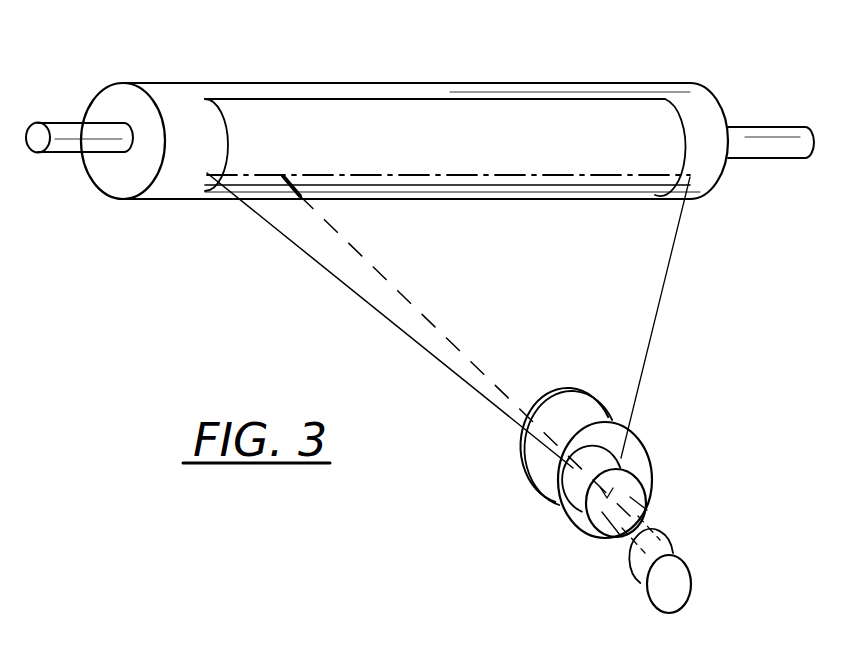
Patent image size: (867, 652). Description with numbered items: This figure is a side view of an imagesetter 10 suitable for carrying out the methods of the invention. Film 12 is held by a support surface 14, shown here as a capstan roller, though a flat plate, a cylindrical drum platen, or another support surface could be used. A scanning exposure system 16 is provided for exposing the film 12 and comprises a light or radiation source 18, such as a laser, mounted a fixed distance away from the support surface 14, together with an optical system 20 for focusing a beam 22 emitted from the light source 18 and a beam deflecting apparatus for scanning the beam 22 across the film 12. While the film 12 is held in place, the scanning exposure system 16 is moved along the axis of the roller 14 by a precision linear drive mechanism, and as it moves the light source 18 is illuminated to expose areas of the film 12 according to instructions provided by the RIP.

The imagesetter 10 is at (594, 500).
The film 12 is at (708, 173).
The support surface 14 is at (697, 100).
The scanning exposure system 16 is at (632, 494).
The light or radiation source 18 is at (680, 583).
The optical system 20 is at (541, 473).
The beam 22 is at (345, 288).